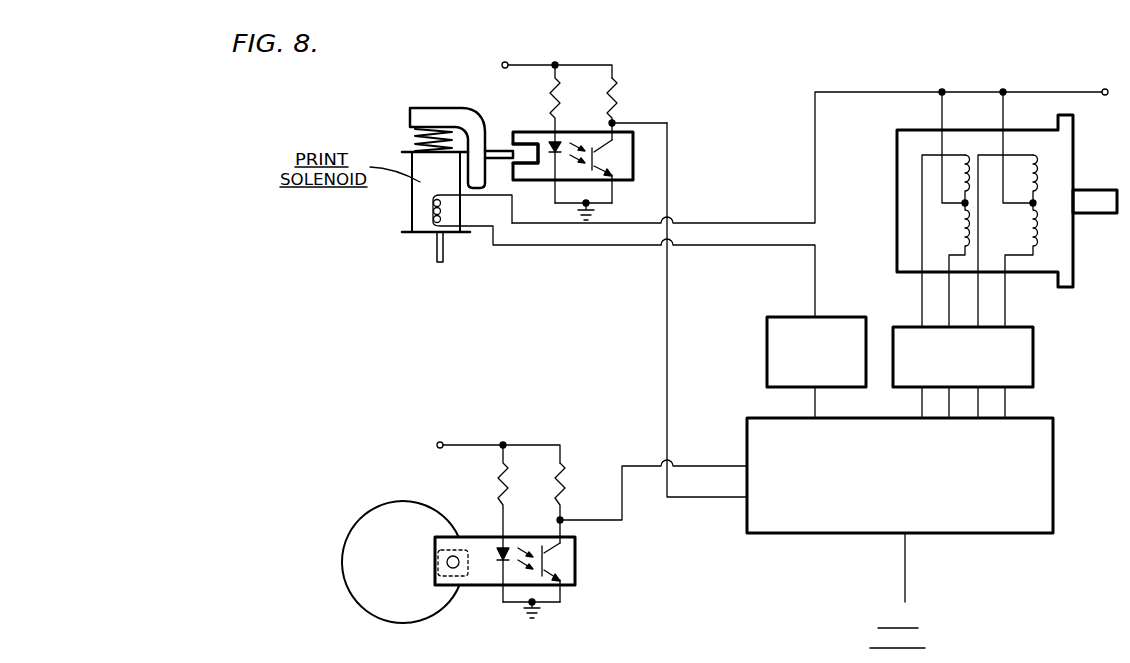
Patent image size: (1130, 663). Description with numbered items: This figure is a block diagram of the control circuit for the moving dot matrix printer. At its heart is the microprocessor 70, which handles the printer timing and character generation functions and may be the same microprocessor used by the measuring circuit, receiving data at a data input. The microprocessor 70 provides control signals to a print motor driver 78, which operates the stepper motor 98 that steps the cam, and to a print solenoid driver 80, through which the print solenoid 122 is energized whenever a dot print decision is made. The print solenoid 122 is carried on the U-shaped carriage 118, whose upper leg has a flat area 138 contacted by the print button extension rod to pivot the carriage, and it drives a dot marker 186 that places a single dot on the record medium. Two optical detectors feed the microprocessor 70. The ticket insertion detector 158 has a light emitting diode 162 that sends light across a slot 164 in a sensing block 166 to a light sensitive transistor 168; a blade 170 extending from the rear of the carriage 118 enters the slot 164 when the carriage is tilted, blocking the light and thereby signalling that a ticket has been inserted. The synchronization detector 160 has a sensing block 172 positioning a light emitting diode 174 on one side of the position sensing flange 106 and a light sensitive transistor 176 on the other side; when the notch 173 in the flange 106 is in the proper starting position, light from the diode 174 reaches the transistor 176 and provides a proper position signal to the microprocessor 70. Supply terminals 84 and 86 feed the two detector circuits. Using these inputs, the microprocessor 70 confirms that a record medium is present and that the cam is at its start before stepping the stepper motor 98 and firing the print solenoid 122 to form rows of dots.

The microprocessor 70 is at (763, 533).
The print motor driver 78 is at (1033, 345).
The print solenoid driver 80 is at (766, 368).
The voltage supply terminal 84 is at (539, 62).
The voltage supply terminal 86 is at (480, 445).
The stepper motor 98 is at (1037, 267).
The position sensing flange 106 is at (398, 498).
The carriage 118 is at (441, 108).
The print solenoid 122 is at (412, 218).
The flat area 138 is at (408, 118).
The ticket insertion detector 158 is at (607, 128).
The synchronization detector 160 is at (544, 540).
The light emitting diode 162 is at (557, 142).
The slot 164 is at (534, 157).
The sensing block 166 is at (630, 170).
The light sensitive transistor 168 is at (605, 150).
The blade 170 is at (490, 151).
The sensing block 172 is at (566, 585).
The notch 173 is at (477, 552).
The light emitting diode 174 is at (508, 549).
The light sensitive transistor 176 is at (563, 552).
The dot marker 186 is at (443, 256).